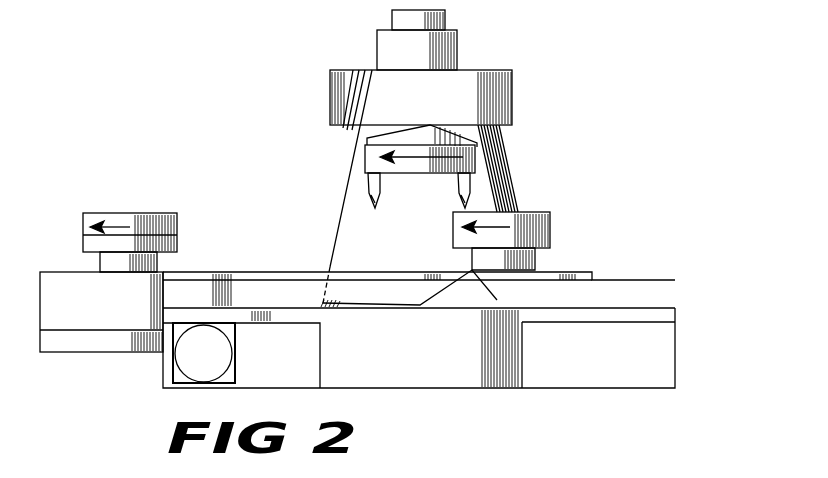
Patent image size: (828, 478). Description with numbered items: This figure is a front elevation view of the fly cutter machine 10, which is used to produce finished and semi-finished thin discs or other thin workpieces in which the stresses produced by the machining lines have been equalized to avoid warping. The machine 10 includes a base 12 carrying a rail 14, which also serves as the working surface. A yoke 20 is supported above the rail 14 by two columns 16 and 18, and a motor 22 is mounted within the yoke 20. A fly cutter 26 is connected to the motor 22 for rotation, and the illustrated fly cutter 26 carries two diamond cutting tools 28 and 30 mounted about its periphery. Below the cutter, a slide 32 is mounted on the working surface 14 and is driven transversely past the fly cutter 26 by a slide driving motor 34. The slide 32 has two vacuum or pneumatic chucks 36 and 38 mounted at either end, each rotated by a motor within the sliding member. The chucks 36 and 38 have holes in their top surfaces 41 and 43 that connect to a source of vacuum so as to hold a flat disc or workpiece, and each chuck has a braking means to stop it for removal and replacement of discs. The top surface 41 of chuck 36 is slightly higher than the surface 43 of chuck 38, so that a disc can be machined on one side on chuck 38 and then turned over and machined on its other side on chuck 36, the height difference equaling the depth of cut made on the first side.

The fly cutter machine 10 is at (553, 168).
The base 12 is at (500, 383).
The rail 14 is at (657, 310).
The column 16 is at (498, 299).
The column 18 is at (350, 203).
The yoke 20 is at (512, 81).
The motor 22 is at (457, 56).
The fly cutter 26 is at (438, 174).
The diamond cutting tool 28 is at (377, 208).
The diamond cutting tool 30 is at (470, 190).
The slide 32 is at (45, 272).
The slide driving motor 34 is at (216, 366).
The pneumatic chuck 36 is at (177, 226).
The pneumatic chuck 38 is at (553, 236).
The top surface 41 is at (112, 213).
The top surface 43 is at (540, 212).